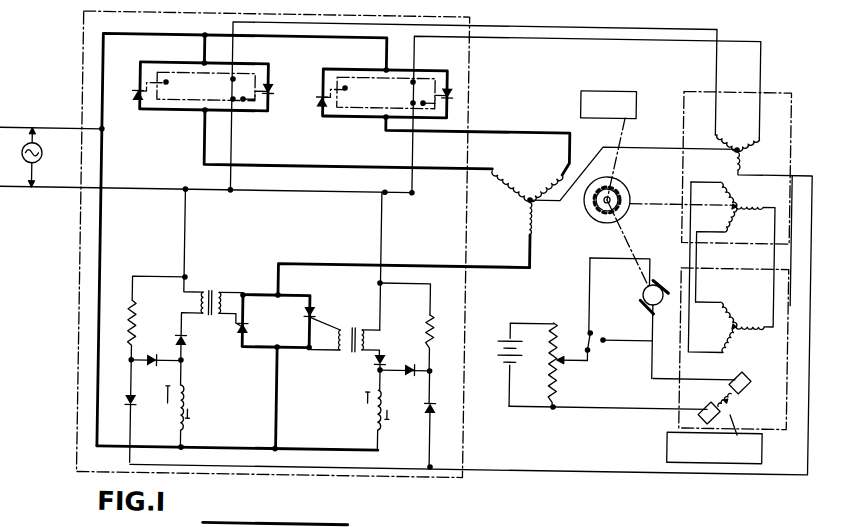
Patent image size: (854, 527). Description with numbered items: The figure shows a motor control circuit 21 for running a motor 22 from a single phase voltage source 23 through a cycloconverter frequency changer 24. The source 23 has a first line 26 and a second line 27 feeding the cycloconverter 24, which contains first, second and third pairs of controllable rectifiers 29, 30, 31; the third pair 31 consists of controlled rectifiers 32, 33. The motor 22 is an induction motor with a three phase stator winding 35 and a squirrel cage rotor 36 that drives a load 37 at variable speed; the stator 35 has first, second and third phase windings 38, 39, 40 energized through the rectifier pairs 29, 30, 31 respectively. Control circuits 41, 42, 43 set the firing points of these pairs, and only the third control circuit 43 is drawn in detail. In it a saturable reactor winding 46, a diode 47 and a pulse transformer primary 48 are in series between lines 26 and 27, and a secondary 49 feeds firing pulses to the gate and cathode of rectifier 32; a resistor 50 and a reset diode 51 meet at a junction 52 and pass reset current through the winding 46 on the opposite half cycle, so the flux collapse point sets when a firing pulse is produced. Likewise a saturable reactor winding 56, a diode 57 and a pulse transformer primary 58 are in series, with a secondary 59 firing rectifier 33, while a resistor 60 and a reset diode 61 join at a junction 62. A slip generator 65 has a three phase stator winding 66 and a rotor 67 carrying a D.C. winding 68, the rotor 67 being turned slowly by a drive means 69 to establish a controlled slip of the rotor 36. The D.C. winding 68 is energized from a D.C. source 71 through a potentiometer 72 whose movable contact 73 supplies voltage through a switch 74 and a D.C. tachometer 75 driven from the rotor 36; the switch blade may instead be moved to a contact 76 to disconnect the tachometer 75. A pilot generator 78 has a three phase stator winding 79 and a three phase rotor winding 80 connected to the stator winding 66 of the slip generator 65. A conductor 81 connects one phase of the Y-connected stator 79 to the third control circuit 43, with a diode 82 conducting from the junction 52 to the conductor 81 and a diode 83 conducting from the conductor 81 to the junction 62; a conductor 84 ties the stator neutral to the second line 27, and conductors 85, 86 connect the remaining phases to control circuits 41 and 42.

The motor control circuit 21 is at (518, 69).
The motor 22 is at (567, 230).
The single phase voltage source 23 is at (41, 152).
The cycloconverter frequency changer 24 is at (80, 36).
The first line 26 is at (28, 134).
The second line 27 is at (38, 196).
The first pair of controllable rectifiers 29 is at (243, 114).
The second pair of controllable rectifiers 30 is at (353, 118).
The third pair of controllable rectifiers 31 is at (278, 295).
The controlled rectifier 32 is at (248, 333).
The controlled rectifier 33 is at (309, 318).
The three phase stator winding 35 is at (526, 226).
The squirrel cage rotor 36 is at (624, 182).
The load 37 is at (592, 88).
The first phase winding 38 is at (510, 172).
The second phase winding 39 is at (540, 162).
The third phase winding 40 is at (528, 239).
The control circuit 41 is at (177, 66).
The control circuit 42 is at (355, 71).
The third control circuit 43 is at (239, 418).
The saturable reactor winding 46 is at (188, 402).
The diode 47 is at (188, 344).
The pulse transformer primary 48 is at (206, 295).
The pulse transformer secondary 49 is at (222, 295).
The resistor 50 is at (131, 316).
The reset diode 51 is at (154, 361).
The junction 52 is at (130, 364).
The saturable reactor winding 56 is at (380, 421).
The diode 57 is at (380, 366).
The pulse transformer primary 58 is at (366, 331).
The pulse transformer secondary 59 is at (339, 331).
The resistor 60 is at (433, 325).
The reset diode 61 is at (412, 366).
The junction 62 is at (434, 368).
The slip generator 65 is at (791, 292).
The three phase stator winding 66 is at (746, 315).
The rotor 67 is at (750, 375).
The D.C. winding 68 is at (744, 393).
The drive means 69 is at (770, 460).
The D.C. source 71 is at (507, 364).
The potentiometer 72 is at (558, 391).
The movable contact 73 is at (580, 358).
The switch 74 is at (588, 334).
The D.C. tachometer 75 is at (664, 281).
The contact 76 is at (604, 337).
The pilot generator 78 is at (788, 130).
The three phase stator winding 79 is at (718, 136).
The three phase rotor winding 80 is at (740, 203).
The conductor 81 is at (789, 170).
The diode 82 is at (128, 407).
The diode 83 is at (430, 411).
The conductor 84 is at (646, 134).
The conductor 85 is at (714, 68).
The conductor 86 is at (758, 73).